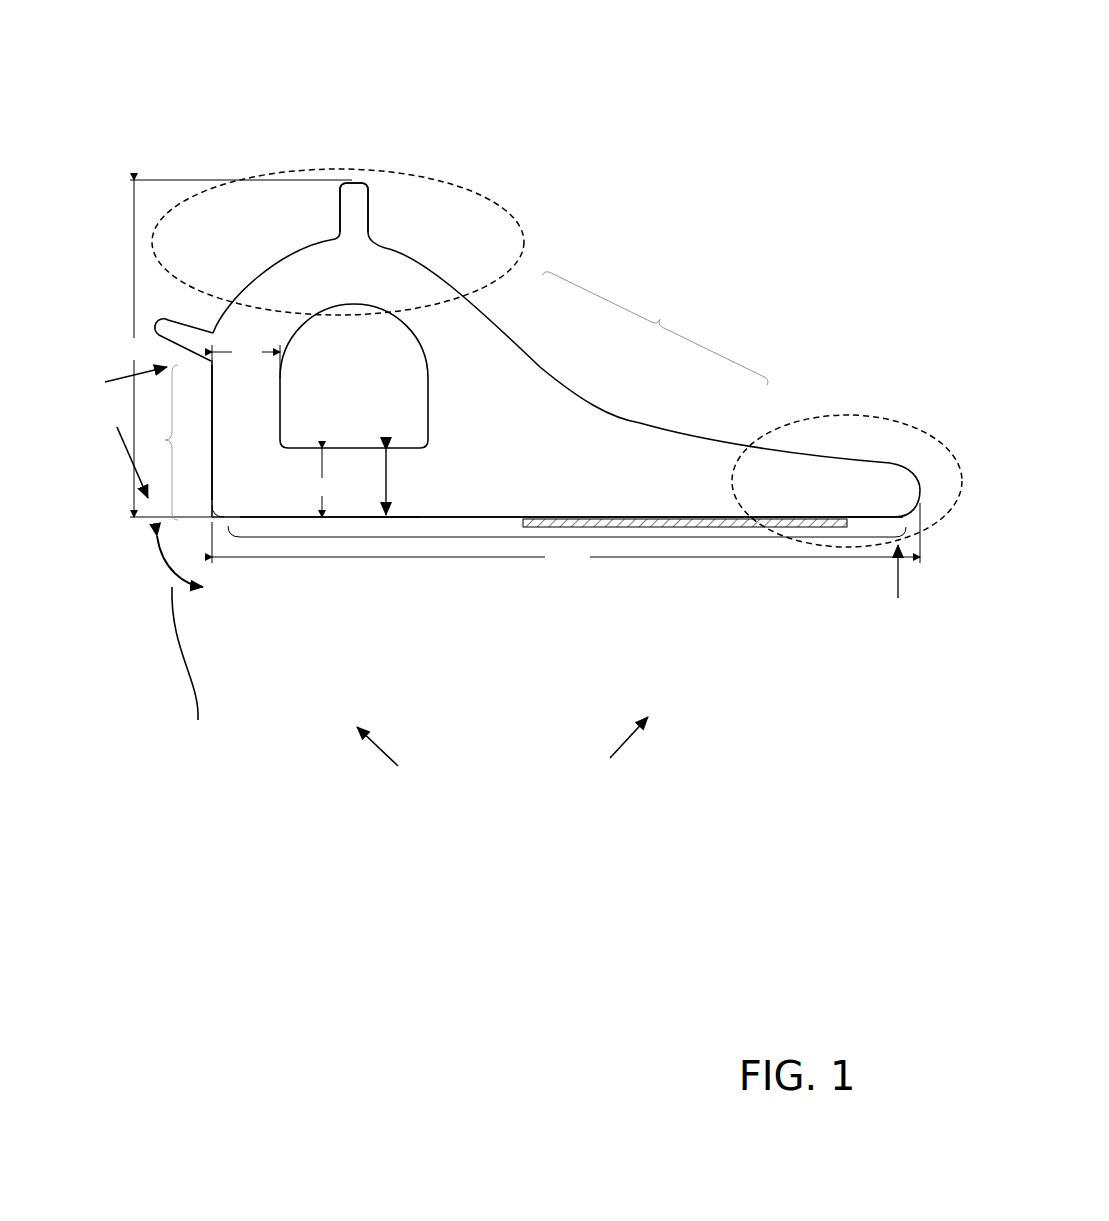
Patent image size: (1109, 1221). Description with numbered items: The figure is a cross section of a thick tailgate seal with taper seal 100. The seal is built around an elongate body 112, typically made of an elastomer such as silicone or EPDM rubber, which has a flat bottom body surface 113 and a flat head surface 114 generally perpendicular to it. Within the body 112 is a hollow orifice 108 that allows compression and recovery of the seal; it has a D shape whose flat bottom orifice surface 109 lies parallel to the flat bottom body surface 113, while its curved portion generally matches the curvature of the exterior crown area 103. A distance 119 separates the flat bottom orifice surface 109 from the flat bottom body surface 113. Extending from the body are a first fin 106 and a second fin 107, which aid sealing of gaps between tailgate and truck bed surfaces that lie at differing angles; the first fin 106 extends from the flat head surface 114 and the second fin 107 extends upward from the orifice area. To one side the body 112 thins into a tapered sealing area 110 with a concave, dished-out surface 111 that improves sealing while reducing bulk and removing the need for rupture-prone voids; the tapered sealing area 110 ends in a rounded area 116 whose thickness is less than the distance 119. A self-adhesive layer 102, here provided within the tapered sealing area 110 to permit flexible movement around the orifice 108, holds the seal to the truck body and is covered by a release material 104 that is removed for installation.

The thick tailgate seal with taper seal 100 is at (501, 429).
The self-adhesive layer 102 is at (683, 522).
The exterior crown area 103 is at (355, 153).
The release material 104 is at (750, 520).
The first fin 106 is at (172, 325).
The second fin 107 is at (340, 183).
The hollow orifice 108 is at (405, 370).
The flat bottom orifice surface 109 is at (400, 452).
The tapered sealing area 110 is at (716, 346).
The concave surface 111 is at (622, 398).
The elongate body 112 is at (380, 540).
The flat bottom body surface 113 is at (470, 538).
The flat head surface 114 is at (160, 462).
The rounded area 116 is at (845, 413).
The distance 119 is at (388, 488).